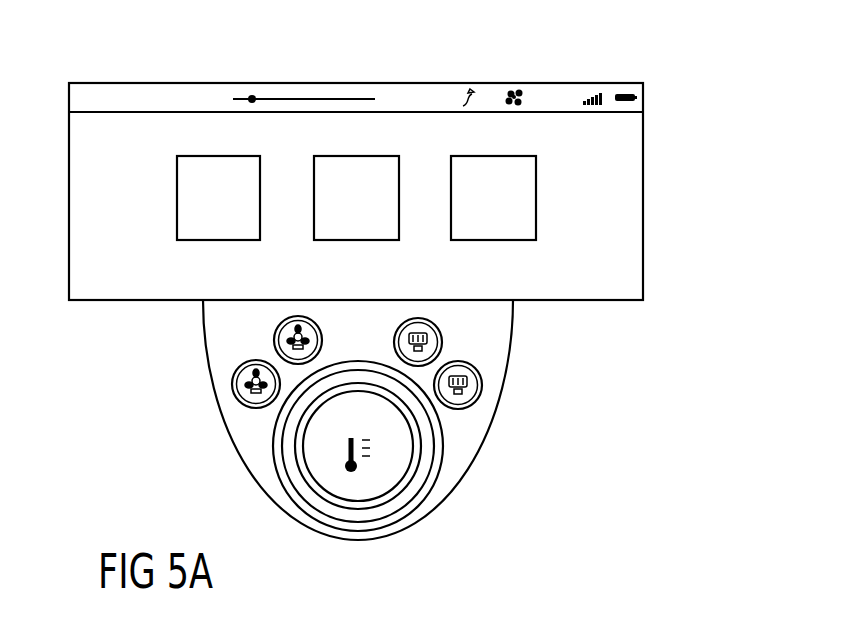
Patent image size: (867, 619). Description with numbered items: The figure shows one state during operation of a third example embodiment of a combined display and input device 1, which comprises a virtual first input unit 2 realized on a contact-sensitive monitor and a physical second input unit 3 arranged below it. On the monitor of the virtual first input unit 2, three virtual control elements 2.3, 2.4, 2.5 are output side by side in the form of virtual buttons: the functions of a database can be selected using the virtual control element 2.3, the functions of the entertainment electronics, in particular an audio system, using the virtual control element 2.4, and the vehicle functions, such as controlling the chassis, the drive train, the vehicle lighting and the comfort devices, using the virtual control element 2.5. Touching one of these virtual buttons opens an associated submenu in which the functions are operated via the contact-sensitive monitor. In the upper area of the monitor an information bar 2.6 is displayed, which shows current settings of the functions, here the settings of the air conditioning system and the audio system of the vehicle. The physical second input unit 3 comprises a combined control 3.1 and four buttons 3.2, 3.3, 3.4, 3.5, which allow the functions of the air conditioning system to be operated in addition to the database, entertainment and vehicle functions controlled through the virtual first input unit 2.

The combined display and input device 1 is at (80, 35).
The virtual first input unit 2 is at (408, 184).
The virtual control element 2.3 is at (218, 198).
The virtual control element 2.4 is at (356, 198).
The virtual control element 2.5 is at (493, 198).
The information bar 2.6 is at (644, 104).
The physical second input unit 3 is at (358, 420).
The combined control 3.1 is at (393, 463).
The button 3.2 is at (233, 386).
The button 3.3 is at (275, 343).
The button 3.4 is at (441, 340).
The button 3.5 is at (482, 385).